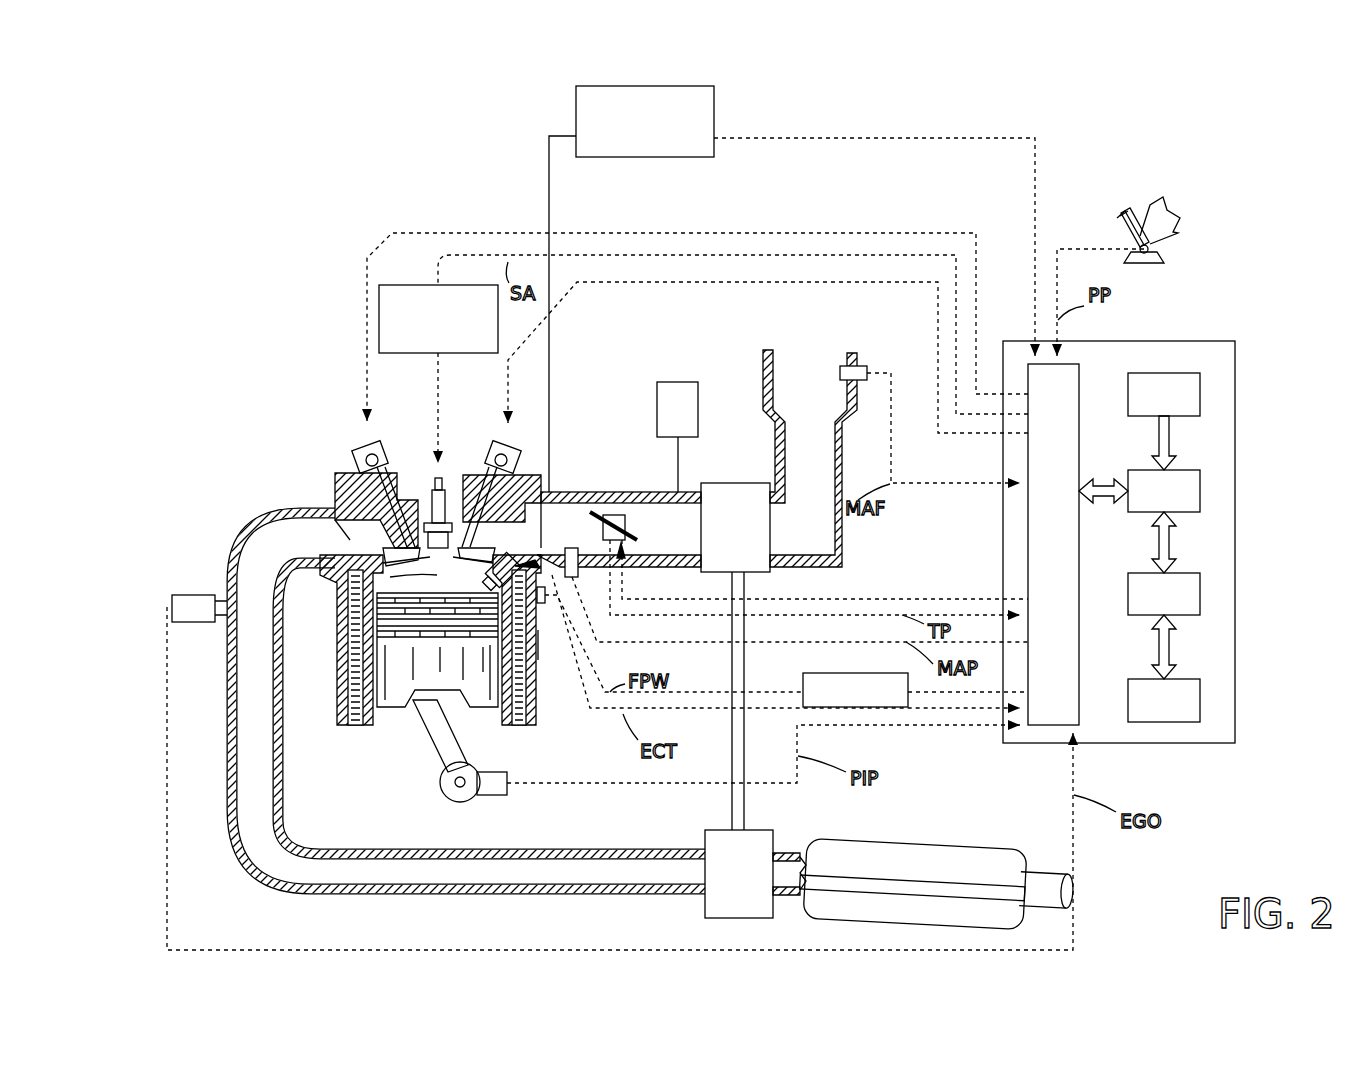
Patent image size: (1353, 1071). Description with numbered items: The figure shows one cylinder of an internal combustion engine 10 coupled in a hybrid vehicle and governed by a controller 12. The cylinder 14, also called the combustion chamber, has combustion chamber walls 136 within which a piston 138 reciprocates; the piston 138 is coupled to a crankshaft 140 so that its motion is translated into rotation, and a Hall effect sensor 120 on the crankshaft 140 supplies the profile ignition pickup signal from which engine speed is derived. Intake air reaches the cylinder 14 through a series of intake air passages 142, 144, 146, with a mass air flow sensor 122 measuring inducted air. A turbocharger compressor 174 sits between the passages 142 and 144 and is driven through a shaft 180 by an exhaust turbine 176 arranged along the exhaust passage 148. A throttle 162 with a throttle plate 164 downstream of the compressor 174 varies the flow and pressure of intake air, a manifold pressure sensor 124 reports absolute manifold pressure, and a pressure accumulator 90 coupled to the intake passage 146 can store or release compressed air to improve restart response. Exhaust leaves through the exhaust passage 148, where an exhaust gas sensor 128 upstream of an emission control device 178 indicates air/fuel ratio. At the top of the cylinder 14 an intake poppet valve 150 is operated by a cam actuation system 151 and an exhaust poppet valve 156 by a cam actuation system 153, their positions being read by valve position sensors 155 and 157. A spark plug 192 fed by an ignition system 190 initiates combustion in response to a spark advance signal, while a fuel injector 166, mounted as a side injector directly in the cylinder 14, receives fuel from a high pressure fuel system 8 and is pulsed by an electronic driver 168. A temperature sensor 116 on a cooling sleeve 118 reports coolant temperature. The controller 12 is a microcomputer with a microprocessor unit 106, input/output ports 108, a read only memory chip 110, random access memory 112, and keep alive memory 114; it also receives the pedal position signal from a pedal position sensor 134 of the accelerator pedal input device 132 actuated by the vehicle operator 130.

The high pressure fuel system 8 is at (714, 97).
The internal combustion engine 10 is at (160, 170).
The controller 12 is at (1235, 342).
The cylinder 14 is at (337, 604).
The pressure accumulator 90 is at (677, 437).
The microprocessor unit 106 is at (1200, 487).
The input/output ports 108 is at (1080, 371).
The read only memory chip 110 is at (1200, 394).
The random access memory 112 is at (1200, 597).
The keep alive memory 114 is at (1200, 703).
The temperature sensor 116 is at (545, 665).
The cooling sleeve 118 is at (536, 702).
The Hall effect sensor 120 is at (500, 796).
The mass air flow sensor 122 is at (855, 366).
The manifold pressure sensor 124 is at (585, 590).
The exhaust gas sensor 128 is at (172, 600).
The vehicle operator 130 is at (1172, 214).
The input device 132 is at (1122, 221).
The pedal position sensor 134 is at (1152, 252).
The combustion chamber walls 136 is at (362, 728).
The piston 138 is at (419, 692).
The crankshaft 140 is at (452, 800).
The intake air passage 142 is at (810, 458).
The intake air passage 144 is at (619, 529).
The intake air passage 146 is at (562, 529).
The exhaust passage 148 is at (468, 701).
The intake poppet valve 150 is at (470, 522).
The cam actuation system 151 is at (497, 437).
The cam actuation system 153 is at (386, 436).
The valve position sensor 155 is at (534, 470).
The exhaust poppet valve 156 is at (347, 517).
The valve position sensor 157 is at (353, 456).
The throttle 162 is at (617, 512).
The throttle plate 164 is at (590, 511).
The fuel injector 166 is at (510, 564).
The electronic driver 168 is at (806, 674).
The compressor 174 is at (722, 483).
The exhaust turbine 176 is at (703, 905).
The emission control device 178 is at (985, 850).
The shaft 180 is at (746, 800).
The ignition system 190 is at (394, 285).
The spark plug 192 is at (434, 497).